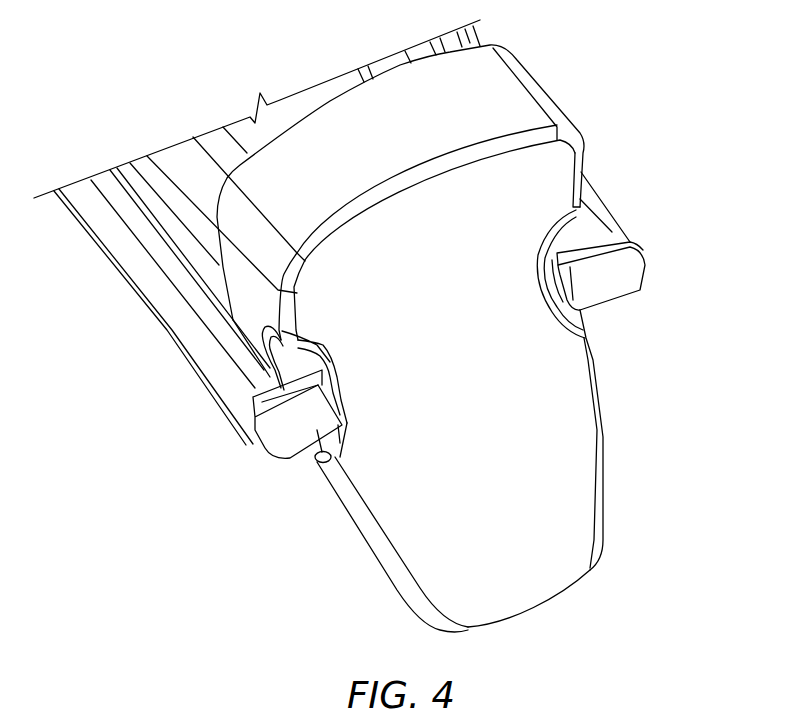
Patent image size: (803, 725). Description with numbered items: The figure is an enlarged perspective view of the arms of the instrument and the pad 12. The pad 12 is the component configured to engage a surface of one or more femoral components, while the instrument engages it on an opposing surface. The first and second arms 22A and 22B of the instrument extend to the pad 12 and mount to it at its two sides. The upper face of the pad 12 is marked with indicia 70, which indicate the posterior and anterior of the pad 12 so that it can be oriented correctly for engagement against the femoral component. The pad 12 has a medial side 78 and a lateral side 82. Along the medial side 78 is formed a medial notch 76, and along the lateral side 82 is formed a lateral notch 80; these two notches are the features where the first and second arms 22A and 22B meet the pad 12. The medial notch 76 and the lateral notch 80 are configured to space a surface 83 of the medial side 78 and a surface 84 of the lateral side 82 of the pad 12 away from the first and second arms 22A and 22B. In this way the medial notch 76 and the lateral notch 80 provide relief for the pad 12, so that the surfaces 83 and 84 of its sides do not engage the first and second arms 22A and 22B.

The pad 12 is at (602, 587).
The first arm 22A is at (162, 298).
The second arm 22B is at (593, 207).
The indicia 70 is at (510, 100).
The medial notch 76 is at (291, 363).
The medial side 78 is at (333, 507).
The lateral notch 80 is at (568, 233).
The lateral side 82 is at (607, 390).
The surface of the medial side 83 is at (383, 573).
The surface of the lateral side 84 is at (603, 437).